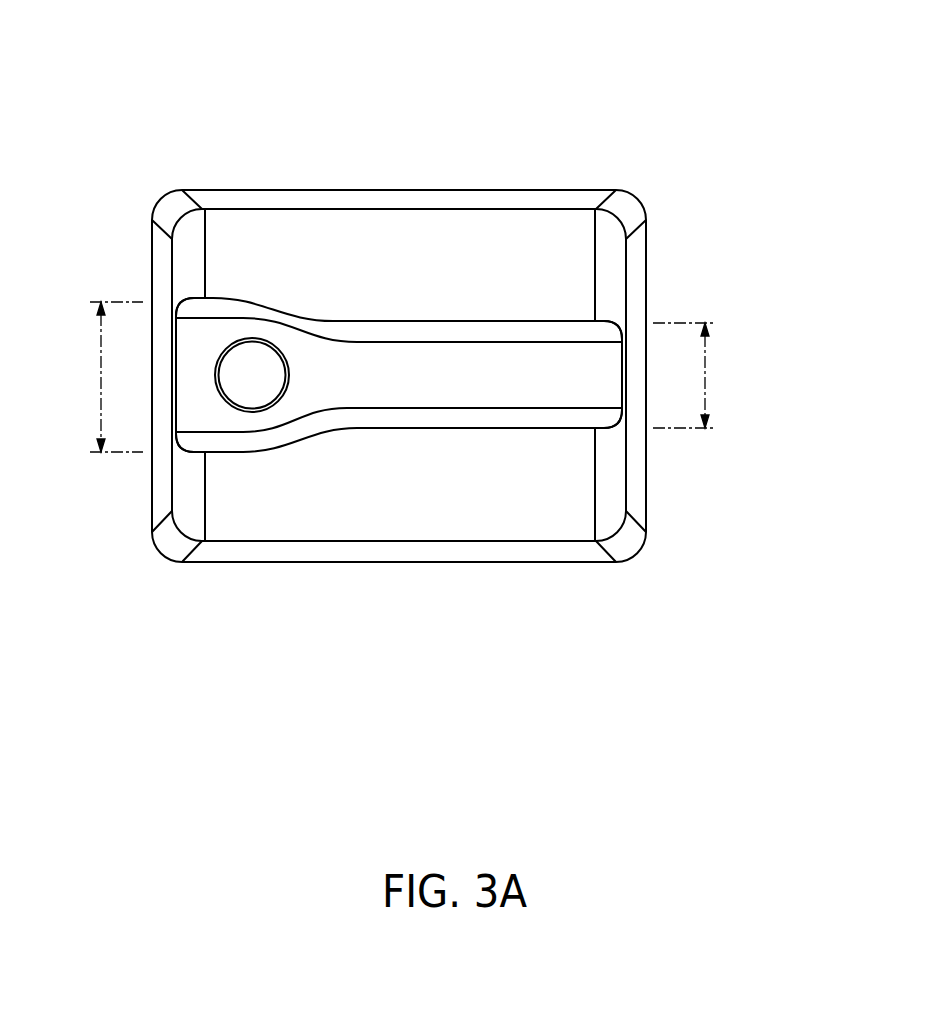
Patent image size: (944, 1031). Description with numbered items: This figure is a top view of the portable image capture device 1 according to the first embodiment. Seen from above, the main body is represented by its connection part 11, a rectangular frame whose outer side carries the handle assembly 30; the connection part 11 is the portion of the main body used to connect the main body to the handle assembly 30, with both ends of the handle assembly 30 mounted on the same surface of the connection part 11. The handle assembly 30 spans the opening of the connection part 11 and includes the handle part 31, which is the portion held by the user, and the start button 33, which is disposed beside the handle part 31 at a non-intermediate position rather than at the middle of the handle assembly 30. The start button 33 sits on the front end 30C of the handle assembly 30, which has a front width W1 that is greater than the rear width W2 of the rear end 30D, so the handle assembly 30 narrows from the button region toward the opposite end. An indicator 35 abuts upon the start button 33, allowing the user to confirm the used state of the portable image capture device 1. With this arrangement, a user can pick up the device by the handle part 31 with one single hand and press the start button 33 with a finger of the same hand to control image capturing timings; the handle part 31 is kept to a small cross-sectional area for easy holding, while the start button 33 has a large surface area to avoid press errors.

The portable image capture device 1 is at (700, 236).
The connection part 11 is at (635, 497).
The handle assembly 30 is at (502, 76).
The front end 30C is at (213, 337).
The rear end 30D is at (604, 360).
The handle part 31 is at (515, 380).
The start button 33 is at (247, 376).
The indicator 35 is at (235, 341).
The front width W1 is at (92, 377).
The rear width W2 is at (707, 375).